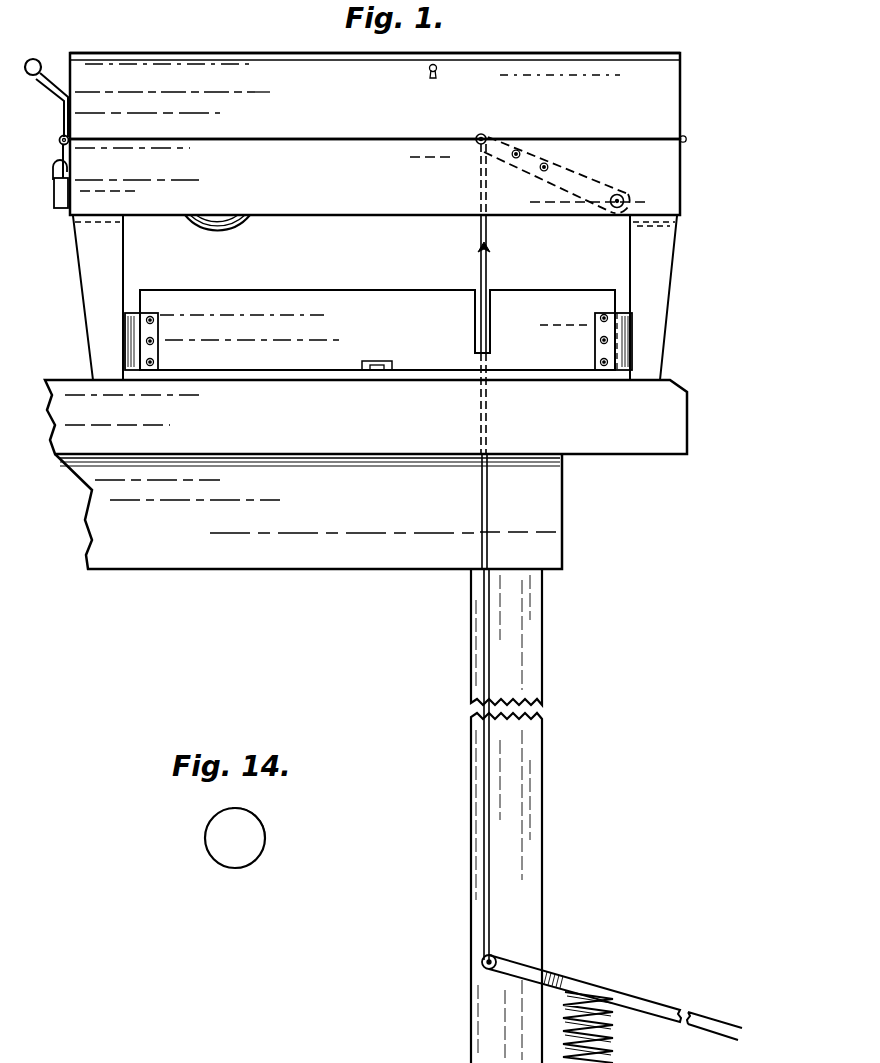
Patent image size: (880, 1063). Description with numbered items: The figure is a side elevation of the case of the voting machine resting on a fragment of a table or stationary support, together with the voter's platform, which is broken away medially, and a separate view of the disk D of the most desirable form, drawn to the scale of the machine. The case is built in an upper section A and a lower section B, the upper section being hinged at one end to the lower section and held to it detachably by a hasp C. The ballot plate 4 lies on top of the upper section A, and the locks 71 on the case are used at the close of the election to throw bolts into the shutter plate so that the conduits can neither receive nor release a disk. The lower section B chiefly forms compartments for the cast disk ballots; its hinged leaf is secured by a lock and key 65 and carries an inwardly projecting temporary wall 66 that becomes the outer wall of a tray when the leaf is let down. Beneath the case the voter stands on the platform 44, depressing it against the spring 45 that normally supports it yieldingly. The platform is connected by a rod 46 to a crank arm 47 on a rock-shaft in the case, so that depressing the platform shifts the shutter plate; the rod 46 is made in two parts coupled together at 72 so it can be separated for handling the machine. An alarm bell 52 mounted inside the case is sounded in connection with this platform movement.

In FIG. 1, the ballot plate 4 is at (681, 54).
In FIG. 1, the upper section A is at (680, 96).
In FIG. 1, the lower section B is at (683, 187).
In FIG. 1, the hasp C is at (58, 113).
In FIG. 1, the lock 71 is at (441, 66).
In FIG. 1, the crank arm 47 is at (588, 179).
In FIG. 1, the coupling 72 is at (492, 251).
In FIG. 1, the alarm bell 52 is at (244, 221).
In FIG. 1, the temporary wall 66 is at (360, 296).
In FIG. 1, the lock and key 65 is at (385, 361).
In FIG. 1, the rod 46 is at (486, 768).
In FIG. 1, the platform 44 is at (653, 1001).
In FIG. 1, the spring 45 is at (619, 1031).
In FIG. 14, the disk D is at (208, 838).